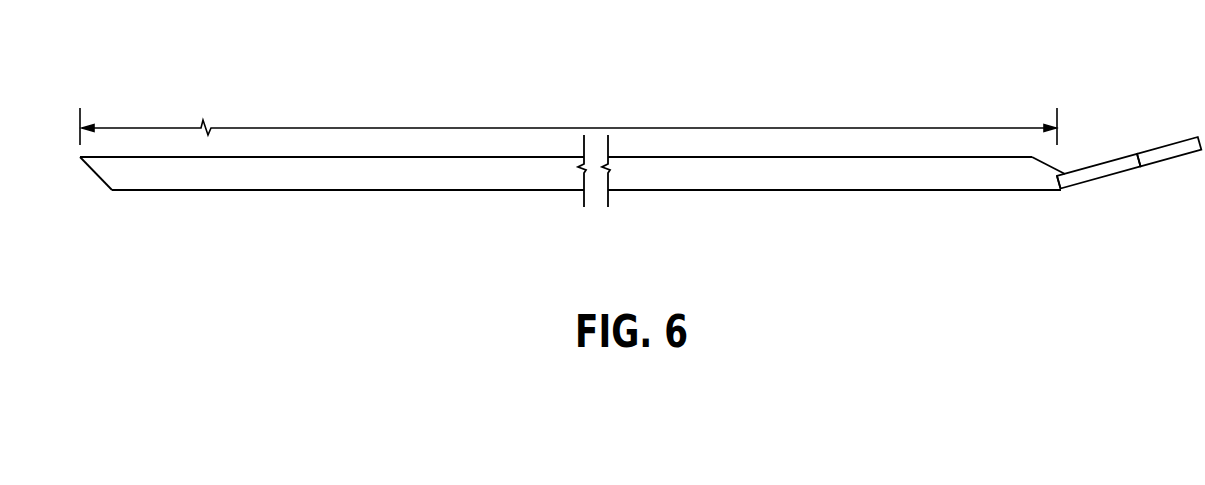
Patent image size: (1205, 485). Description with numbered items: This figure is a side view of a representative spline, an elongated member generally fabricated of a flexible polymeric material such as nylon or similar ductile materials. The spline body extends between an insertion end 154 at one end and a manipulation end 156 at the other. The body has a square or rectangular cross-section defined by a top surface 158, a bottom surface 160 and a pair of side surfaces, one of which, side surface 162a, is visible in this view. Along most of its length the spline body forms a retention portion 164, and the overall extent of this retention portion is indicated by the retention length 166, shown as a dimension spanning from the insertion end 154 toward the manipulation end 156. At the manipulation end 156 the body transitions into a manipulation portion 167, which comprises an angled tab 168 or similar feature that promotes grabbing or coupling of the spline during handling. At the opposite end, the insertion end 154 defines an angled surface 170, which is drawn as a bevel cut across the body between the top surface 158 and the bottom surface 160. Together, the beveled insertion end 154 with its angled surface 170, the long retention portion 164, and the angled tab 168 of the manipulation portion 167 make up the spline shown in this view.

The insertion end 154 is at (85, 170).
The manipulation end 156 is at (1125, 173).
The top surface 158 is at (313, 157).
The bottom surface 160 is at (322, 190).
The side surface 162a is at (425, 180).
The retention portion 164 is at (522, 180).
The retention length 166 is at (701, 127).
The manipulation portion 167 is at (1083, 188).
The angled tab 168 is at (1113, 152).
The angled surface 170 is at (105, 190).